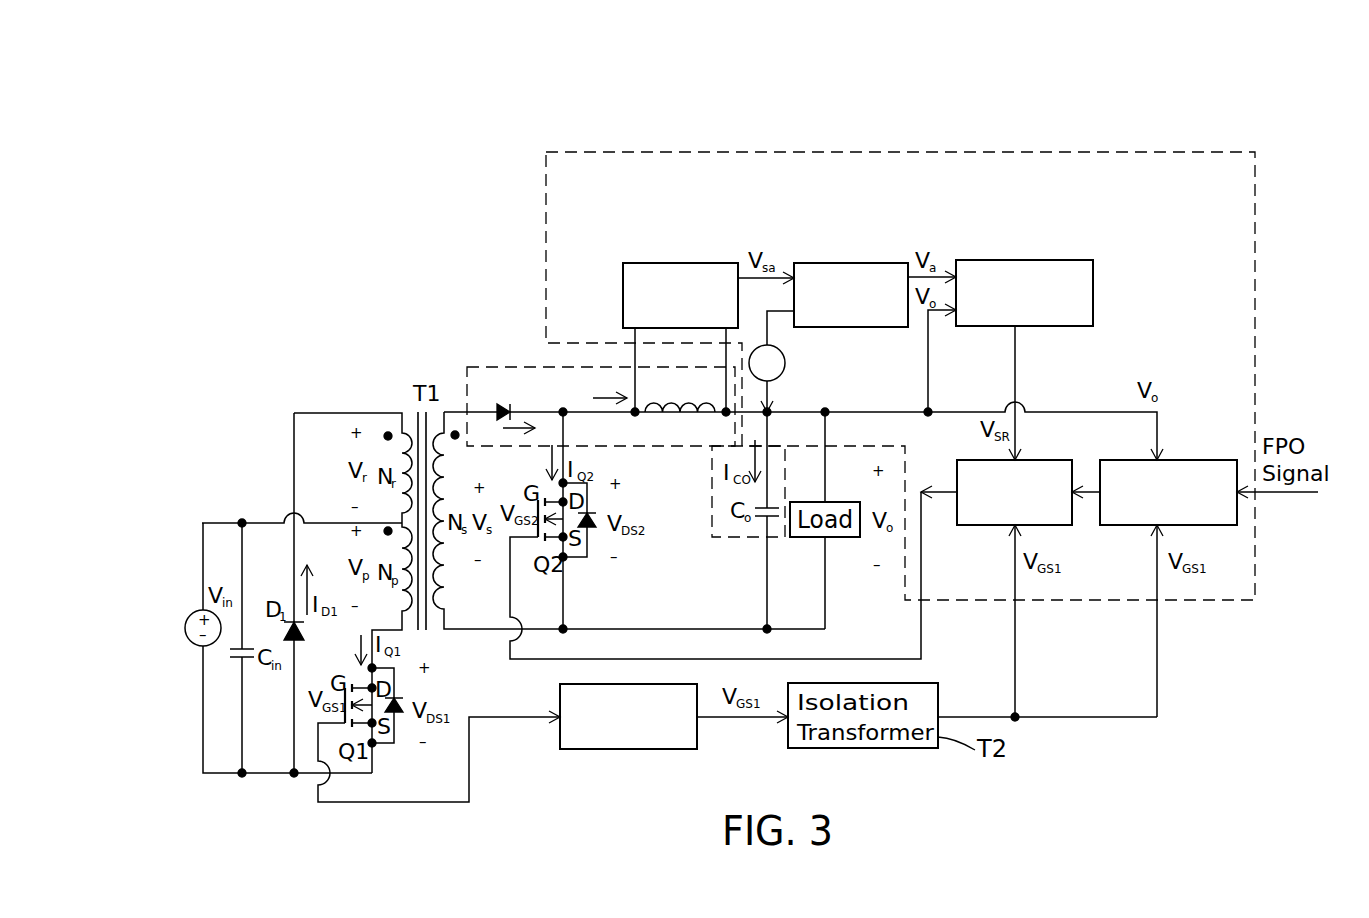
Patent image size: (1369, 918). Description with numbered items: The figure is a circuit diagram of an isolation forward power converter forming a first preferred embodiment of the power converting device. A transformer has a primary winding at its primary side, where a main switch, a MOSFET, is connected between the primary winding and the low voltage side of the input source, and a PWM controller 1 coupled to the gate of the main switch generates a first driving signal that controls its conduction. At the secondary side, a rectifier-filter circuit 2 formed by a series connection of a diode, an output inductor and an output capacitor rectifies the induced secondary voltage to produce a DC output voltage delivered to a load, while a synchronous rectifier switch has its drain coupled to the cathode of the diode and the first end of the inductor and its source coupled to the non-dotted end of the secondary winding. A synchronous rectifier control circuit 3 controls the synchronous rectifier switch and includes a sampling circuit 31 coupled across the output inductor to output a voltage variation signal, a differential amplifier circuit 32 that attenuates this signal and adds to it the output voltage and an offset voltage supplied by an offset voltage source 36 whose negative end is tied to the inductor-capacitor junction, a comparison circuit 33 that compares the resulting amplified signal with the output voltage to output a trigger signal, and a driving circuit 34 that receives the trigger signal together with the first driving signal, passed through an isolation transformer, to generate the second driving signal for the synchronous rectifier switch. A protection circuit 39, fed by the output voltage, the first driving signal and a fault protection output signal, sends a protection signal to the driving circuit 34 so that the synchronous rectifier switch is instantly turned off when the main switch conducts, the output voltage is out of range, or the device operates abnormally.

The pulse-width modulation (PWM) controller 1 is at (697, 737).
The rectifier-filter circuit 2 is at (524, 363).
The synchronous rectifier control circuit 3 is at (1255, 232).
The sampling circuit 31 is at (700, 262).
The differential amplifier circuit 32 is at (848, 293).
The comparison circuit 33 is at (1033, 260).
The driving circuit 34 is at (1033, 460).
The offset voltage source 36 is at (762, 342).
The protection circuit 39 is at (1177, 460).